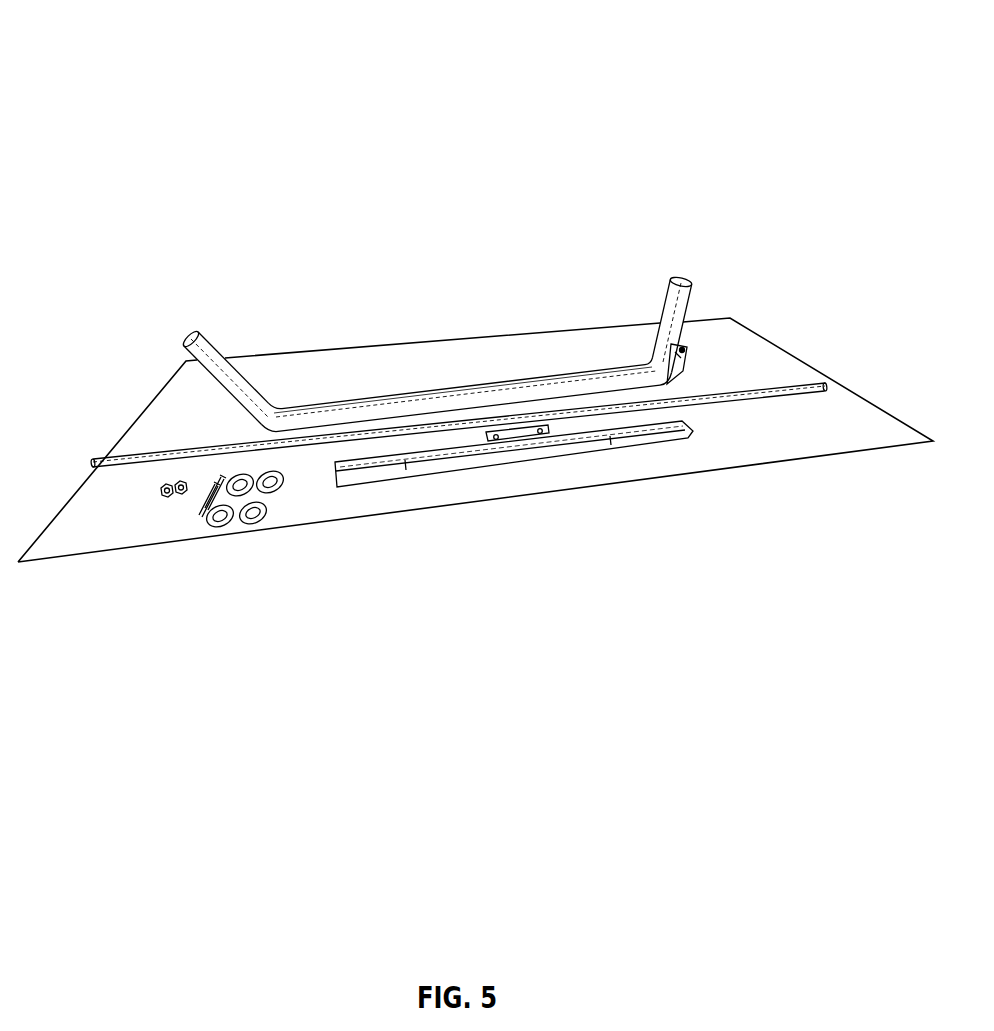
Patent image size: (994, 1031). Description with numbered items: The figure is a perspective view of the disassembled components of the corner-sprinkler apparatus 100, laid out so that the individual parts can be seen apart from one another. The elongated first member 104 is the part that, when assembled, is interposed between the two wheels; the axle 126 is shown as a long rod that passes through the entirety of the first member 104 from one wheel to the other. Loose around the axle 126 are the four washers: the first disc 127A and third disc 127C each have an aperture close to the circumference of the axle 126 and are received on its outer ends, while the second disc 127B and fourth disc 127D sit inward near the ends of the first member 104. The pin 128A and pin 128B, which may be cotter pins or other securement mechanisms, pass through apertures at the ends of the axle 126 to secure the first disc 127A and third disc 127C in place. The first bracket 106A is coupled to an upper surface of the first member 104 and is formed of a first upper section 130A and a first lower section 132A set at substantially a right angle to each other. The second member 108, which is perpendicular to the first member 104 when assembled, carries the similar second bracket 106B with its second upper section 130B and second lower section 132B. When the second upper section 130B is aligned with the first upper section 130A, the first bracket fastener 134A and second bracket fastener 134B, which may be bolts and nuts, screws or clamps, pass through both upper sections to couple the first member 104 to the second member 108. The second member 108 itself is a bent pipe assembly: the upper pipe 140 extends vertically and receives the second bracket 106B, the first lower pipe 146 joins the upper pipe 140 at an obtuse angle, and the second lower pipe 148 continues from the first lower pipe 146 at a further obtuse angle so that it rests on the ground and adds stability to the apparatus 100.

The corner-sprinkler apparatus 100 is at (168, 78).
The first member 104 is at (660, 430).
The first bracket 106A is at (508, 435).
The second bracket 106B is at (678, 355).
The second member 108 is at (580, 377).
The axle 126 is at (772, 393).
The first disc 127A is at (210, 522).
The second disc 127B is at (248, 524).
The third disc 127C is at (278, 496).
The fourth disc 127D is at (233, 524).
The pin 128A is at (202, 490).
The pin 128B is at (207, 510).
The first upper section 130A is at (530, 436).
The second upper section 130B is at (687, 347).
The first lower section 132A is at (497, 445).
The second lower section 132B is at (680, 345).
The first bracket fastener 134A is at (167, 483).
The second bracket fastener 134B is at (177, 500).
The upper pipe 140 is at (673, 312).
The first lower pipe 146 is at (492, 387).
The second lower pipe 148 is at (217, 362).